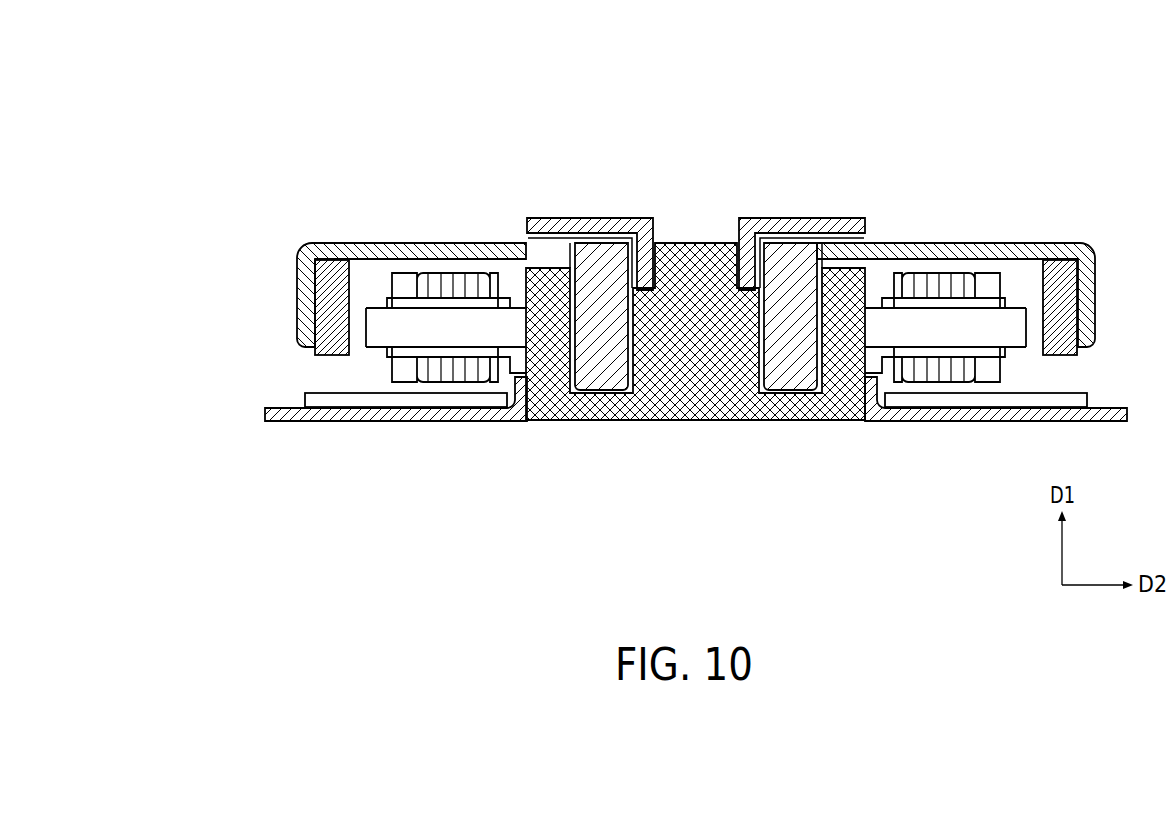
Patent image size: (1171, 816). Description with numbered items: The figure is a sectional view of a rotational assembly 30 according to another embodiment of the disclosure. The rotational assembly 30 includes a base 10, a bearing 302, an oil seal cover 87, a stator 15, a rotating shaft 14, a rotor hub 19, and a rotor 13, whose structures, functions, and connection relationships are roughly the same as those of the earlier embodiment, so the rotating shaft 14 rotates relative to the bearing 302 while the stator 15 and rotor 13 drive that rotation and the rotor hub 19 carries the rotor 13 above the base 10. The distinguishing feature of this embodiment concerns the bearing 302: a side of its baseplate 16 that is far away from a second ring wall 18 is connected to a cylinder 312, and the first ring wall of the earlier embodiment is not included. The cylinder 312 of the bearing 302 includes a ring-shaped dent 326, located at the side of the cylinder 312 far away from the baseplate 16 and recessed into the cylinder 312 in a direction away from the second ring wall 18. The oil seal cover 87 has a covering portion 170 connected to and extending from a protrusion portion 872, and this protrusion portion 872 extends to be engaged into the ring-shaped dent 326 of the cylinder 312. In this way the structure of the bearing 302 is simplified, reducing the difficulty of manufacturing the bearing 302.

The rotational assembly 30 is at (258, 82).
The base 10 is at (445, 415).
The rotor 13 is at (331, 293).
The rotating shaft 14 is at (588, 297).
The stator 15 is at (445, 285).
The baseplate 16 is at (600, 403).
The second ring wall 18 is at (543, 367).
The rotor hub 19 is at (473, 250).
The oil seal cover 87 is at (696, 192).
The covering portion 170 is at (572, 220).
The protrusion portion 872 is at (647, 222).
The bearing 302 is at (695, 385).
The cylinder 312 is at (696, 368).
The ring-shaped dent 326 is at (659, 238).